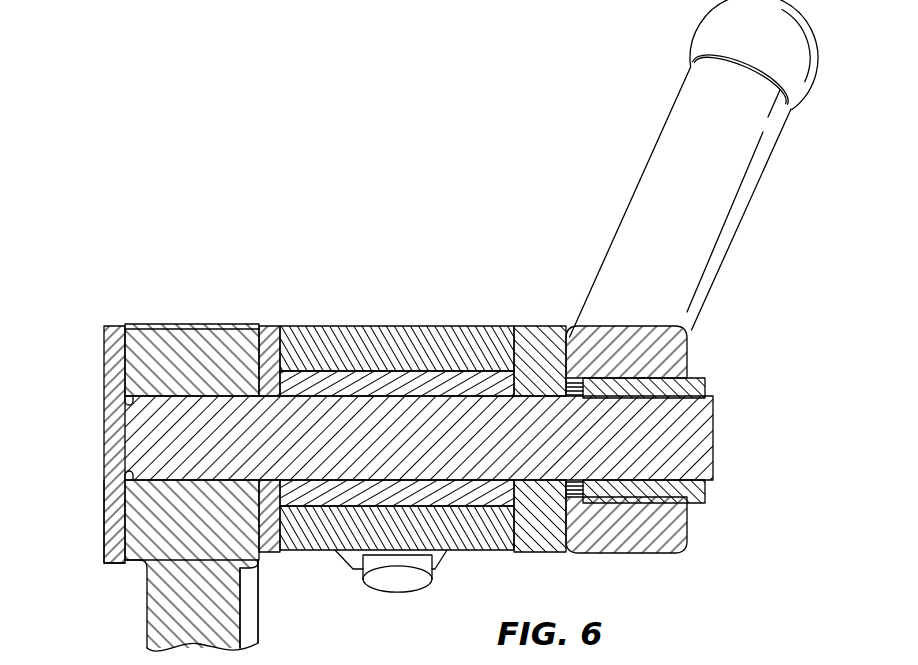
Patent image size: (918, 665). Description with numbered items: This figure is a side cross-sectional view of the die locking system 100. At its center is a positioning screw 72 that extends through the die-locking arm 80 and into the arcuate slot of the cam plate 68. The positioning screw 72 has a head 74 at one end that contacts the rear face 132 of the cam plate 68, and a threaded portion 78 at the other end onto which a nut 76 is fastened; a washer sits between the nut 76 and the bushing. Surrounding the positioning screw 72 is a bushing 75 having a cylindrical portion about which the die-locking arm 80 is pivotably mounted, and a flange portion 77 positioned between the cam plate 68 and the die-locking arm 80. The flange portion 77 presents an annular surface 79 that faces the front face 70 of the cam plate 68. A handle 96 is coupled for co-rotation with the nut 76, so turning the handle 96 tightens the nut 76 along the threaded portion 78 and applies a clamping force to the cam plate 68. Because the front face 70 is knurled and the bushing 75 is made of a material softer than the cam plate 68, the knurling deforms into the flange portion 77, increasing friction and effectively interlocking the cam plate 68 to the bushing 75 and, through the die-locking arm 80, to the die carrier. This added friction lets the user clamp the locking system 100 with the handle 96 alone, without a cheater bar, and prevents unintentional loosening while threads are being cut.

The locking system 100 is at (320, 184).
The cam plate 68 is at (142, 610).
The front face 70 is at (258, 362).
The positioning screw 72 is at (705, 444).
The head 74 is at (104, 446).
The bushing 75 is at (377, 494).
The nut 76 is at (648, 540).
The flange portion 77 is at (272, 326).
The threaded portion 78 is at (623, 378).
The annular surface 79 is at (247, 528).
The die-locking arm 80 is at (393, 340).
The handle 96 is at (757, 185).
The rear face 132 is at (119, 522).